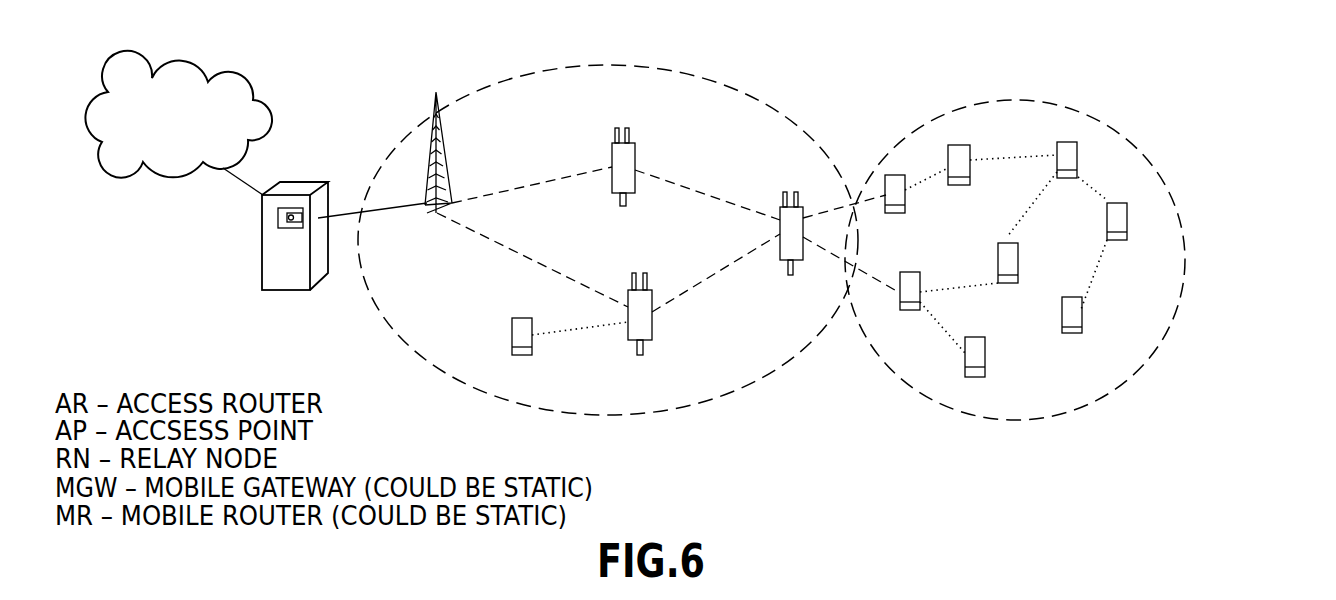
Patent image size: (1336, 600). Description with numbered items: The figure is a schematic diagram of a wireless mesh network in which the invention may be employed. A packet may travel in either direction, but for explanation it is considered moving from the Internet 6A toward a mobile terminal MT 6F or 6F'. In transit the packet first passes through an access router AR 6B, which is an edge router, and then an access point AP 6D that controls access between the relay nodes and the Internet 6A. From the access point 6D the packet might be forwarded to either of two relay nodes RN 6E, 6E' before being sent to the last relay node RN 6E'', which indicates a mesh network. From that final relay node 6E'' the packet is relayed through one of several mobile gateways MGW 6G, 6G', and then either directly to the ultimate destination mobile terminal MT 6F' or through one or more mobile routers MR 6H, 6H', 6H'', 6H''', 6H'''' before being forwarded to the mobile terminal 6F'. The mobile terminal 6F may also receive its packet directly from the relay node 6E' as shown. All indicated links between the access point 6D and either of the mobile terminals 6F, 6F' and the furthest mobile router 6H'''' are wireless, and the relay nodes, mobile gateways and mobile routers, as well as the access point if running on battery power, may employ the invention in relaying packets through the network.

The Internet 6A is at (178, 63).
The access router 6B is at (292, 188).
The access point 6D is at (442, 147).
The relay node 6E is at (608, 160).
The relay node 6E' is at (664, 328).
The relay node 6E'' is at (773, 219).
The mobile terminal 6F is at (504, 352).
The mobile terminal 6F' is at (998, 372).
The mobile gateway 6G is at (904, 192).
The mobile gateway 6G' is at (921, 292).
The mobile router 6H is at (973, 169).
The mobile router 6H' is at (1087, 177).
The mobile router 6H'' is at (990, 278).
The mobile router 6H''' is at (1101, 236).
The mobile router 6H'''' is at (1110, 331).